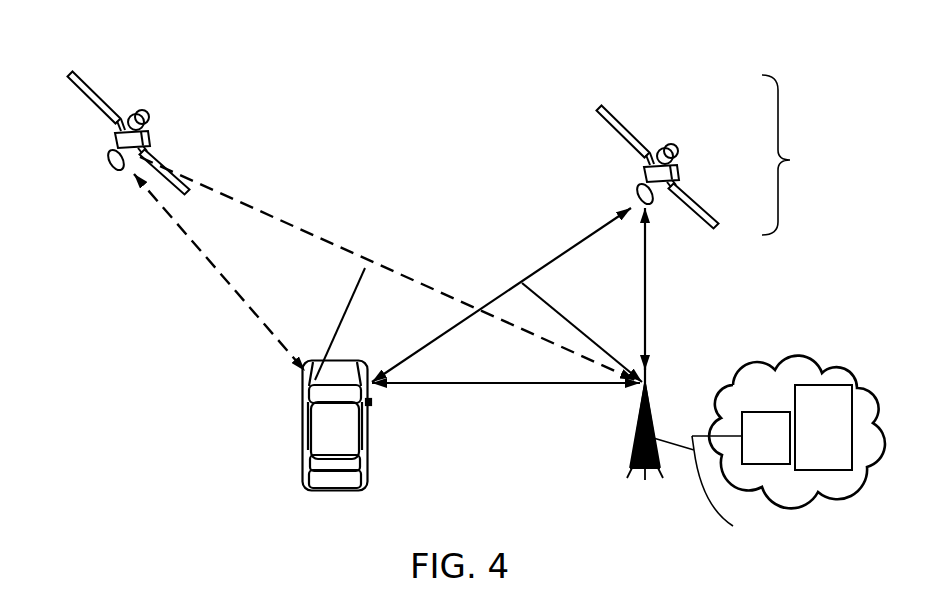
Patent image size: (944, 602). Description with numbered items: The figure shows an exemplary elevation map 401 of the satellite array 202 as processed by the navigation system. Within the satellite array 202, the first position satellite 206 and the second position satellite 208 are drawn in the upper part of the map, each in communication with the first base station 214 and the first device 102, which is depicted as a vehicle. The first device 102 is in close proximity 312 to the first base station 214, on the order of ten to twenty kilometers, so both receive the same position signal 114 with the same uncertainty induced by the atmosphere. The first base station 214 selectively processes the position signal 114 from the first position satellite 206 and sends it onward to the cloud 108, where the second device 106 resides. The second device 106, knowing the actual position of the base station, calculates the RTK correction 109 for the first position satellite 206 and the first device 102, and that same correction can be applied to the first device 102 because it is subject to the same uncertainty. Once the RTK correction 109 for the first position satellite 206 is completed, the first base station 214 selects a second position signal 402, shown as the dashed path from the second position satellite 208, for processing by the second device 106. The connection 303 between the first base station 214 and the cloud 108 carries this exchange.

The elevation map 401 is at (160, 42).
The second position satellite 208 is at (150, 130).
The first position satellite 206 is at (680, 163).
The satellite array 202 is at (790, 160).
The second position signal 402 is at (313, 250).
The close proximity 312 is at (500, 385).
The position signal 114 is at (647, 312).
The first device 102 is at (330, 433).
The first base station 214 is at (645, 437).
The cloud 108 is at (798, 358).
The RTK correction 109 is at (783, 449).
The second device 106 is at (839, 428).
The network connection 303 is at (714, 487).